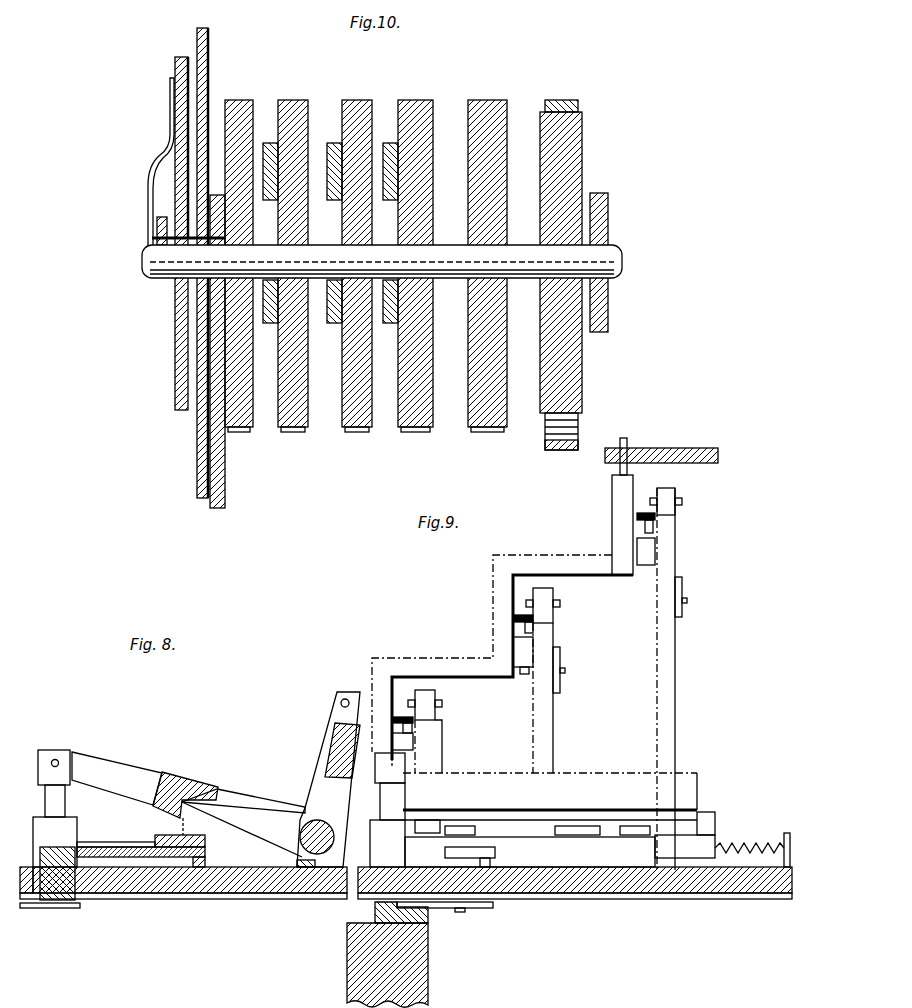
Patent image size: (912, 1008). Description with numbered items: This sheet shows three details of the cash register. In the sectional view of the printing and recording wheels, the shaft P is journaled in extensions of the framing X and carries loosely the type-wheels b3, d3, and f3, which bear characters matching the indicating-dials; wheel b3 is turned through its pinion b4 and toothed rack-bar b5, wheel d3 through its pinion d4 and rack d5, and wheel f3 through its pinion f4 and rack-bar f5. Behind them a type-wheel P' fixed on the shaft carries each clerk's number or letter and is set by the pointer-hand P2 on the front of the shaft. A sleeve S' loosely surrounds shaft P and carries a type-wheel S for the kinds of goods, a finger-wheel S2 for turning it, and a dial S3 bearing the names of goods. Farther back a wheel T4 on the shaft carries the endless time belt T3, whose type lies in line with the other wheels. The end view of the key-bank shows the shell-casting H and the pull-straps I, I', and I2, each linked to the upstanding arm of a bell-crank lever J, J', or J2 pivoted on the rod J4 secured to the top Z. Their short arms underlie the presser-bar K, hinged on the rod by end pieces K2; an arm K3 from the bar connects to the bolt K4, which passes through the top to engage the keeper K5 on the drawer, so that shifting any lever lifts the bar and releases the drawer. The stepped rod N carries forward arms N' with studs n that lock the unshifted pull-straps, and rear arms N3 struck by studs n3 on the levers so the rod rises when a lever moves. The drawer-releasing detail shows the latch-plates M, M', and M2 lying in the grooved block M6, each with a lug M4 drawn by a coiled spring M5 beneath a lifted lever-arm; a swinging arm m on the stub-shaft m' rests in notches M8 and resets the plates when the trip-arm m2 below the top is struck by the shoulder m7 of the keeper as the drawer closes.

In FIG. 10, the shaft P is at (398, 261).
In FIG. 10, the type-wheel P' is at (497, 264).
In FIG. 10, the pointer-hand P2 is at (150, 181).
In FIG. 10, the type-wheel S is at (239, 253).
In FIG. 10, the sleeve S' is at (164, 233).
In FIG. 10, the finger-wheel S2 is at (152, 306).
In FIG. 10, the dial S3 is at (200, 454).
In FIG. 10, the framing X is at (226, 484).
In FIG. 10, the type-wheel d3 is at (298, 118).
In FIG. 10, the pinion d4 is at (270, 326).
In FIG. 10, the rack d5 is at (271, 143).
In FIG. 10, the type-wheel f3 is at (362, 118).
In FIG. 10, the pinion f4 is at (334, 326).
In FIG. 10, the rack-bar f5 is at (332, 190).
In FIG. 10, the type-wheel b3 is at (432, 110).
In FIG. 10, the pinion b4 is at (392, 326).
In FIG. 10, the toothed rack-bar b5 is at (402, 173).
In FIG. 10, the endless belt T3 is at (580, 108).
In FIG. 10, the belt wheel T4 is at (583, 165).
In FIG. 9, the shell-casting H is at (688, 447).
In FIG. 9, the pull-strap I is at (616, 506).
In FIG. 9, the pull-strap I' is at (514, 605).
In FIG. 9, the pull-strap I2 is at (405, 715).
In FIG. 9, the bell-crank lever J is at (658, 679).
In FIG. 9, the bell-crank lever J' is at (529, 698).
In FIG. 9, the bell-crank lever J2 is at (430, 765).
In FIG. 8, the bell-crank lever J2 is at (327, 778).
In FIG. 8, the rod J4 is at (312, 836).
In FIG. 9, the presser-bar K is at (612, 800).
In FIG. 8, the presser-bar K is at (188, 779).
In FIG. 8, the end piece K2 is at (247, 801).
In FIG. 8, the arm K3 is at (122, 769).
In FIG. 9, the bolt K4 is at (405, 803).
In FIG. 8, the bolt K4 is at (72, 810).
In FIG. 9, the keeper K5 is at (375, 910).
In FIG. 9, the latch-plate M is at (685, 846).
In FIG. 8, the latch-plate M is at (161, 839).
In FIG. 8, the latch-plate M' is at (196, 876).
In FIG. 8, the latch-plate M2 is at (208, 862).
In FIG. 9, the lug M4 is at (526, 818).
In FIG. 8, the lug M4 is at (183, 831).
In FIG. 9, the coiled spring M5 is at (740, 846).
In FIG. 9, the grooved block M6 is at (530, 852).
In FIG. 8, the grooved block M6 is at (166, 890).
In FIG. 8, the notch M8 is at (240, 870).
In FIG. 9, the swinging arm m is at (470, 845).
In FIG. 8, the swinging arm m is at (116, 838).
In FIG. 9, the stub-shaft m' is at (509, 858).
In FIG. 8, the stub-shaft m' is at (71, 894).
In FIG. 9, the trip-arm m2 is at (449, 909).
In FIG. 8, the trip-arm m2 is at (46, 909).
In FIG. 9, the shoulder m7 is at (365, 928).
In FIG. 9, the stepped rod N is at (502, 657).
In FIG. 9, the arm N' is at (513, 641).
In FIG. 9, the arm N3 is at (535, 653).
In FIG. 9, the stud n is at (660, 523).
In FIG. 9, the stud n3 is at (525, 676).
In FIG. 9, the top Z is at (631, 897).
In FIG. 8, the top Z is at (280, 898).